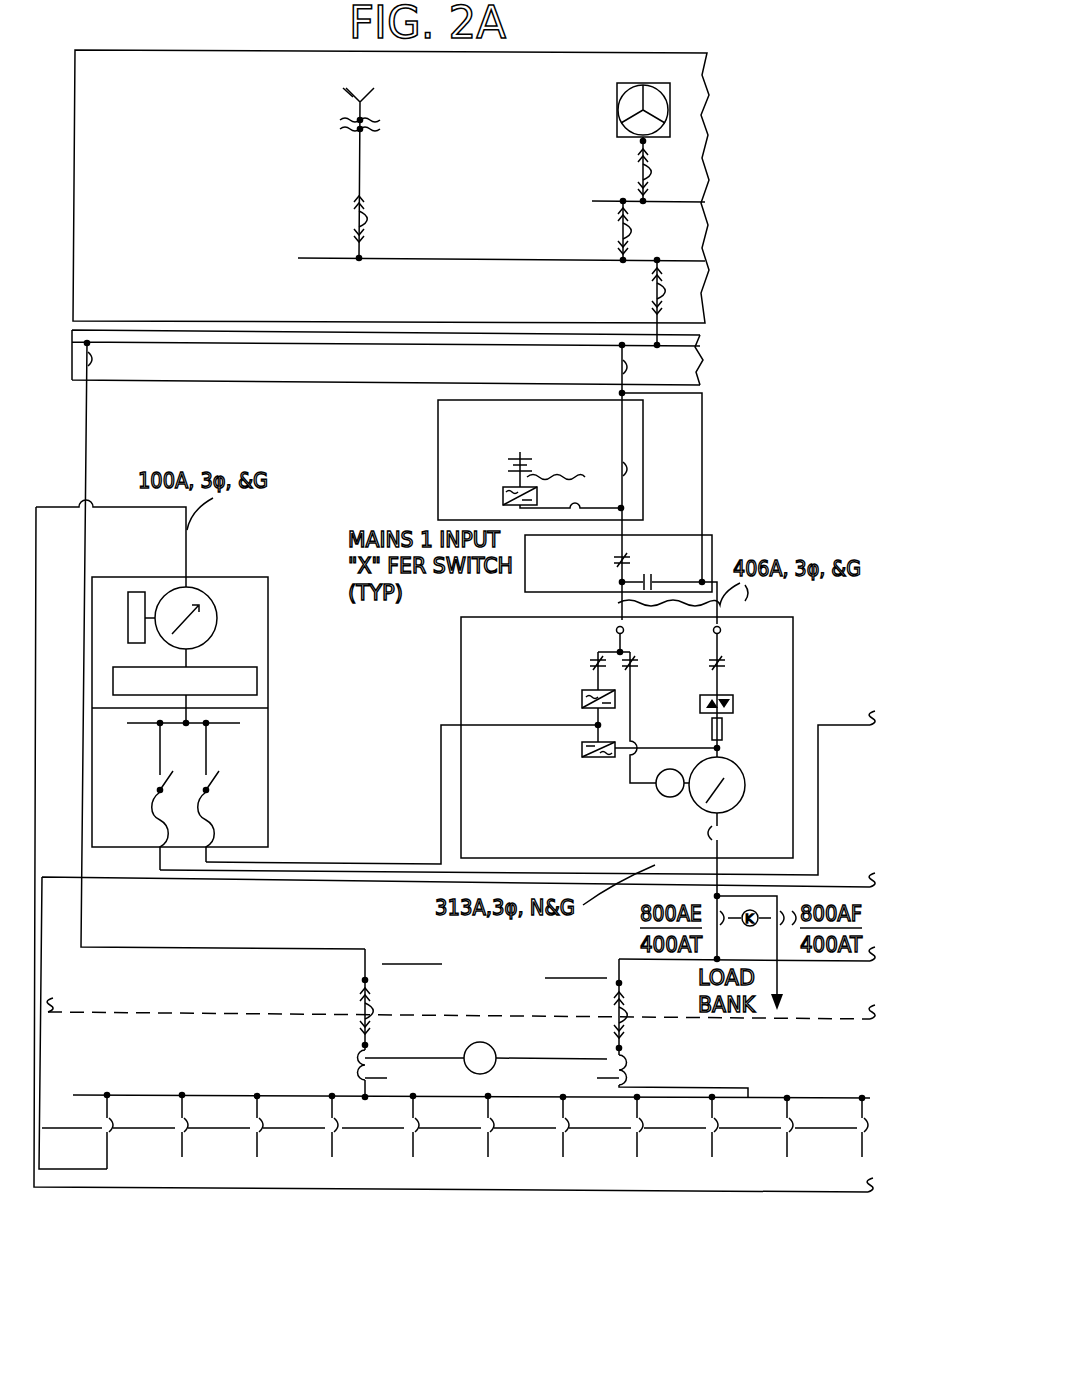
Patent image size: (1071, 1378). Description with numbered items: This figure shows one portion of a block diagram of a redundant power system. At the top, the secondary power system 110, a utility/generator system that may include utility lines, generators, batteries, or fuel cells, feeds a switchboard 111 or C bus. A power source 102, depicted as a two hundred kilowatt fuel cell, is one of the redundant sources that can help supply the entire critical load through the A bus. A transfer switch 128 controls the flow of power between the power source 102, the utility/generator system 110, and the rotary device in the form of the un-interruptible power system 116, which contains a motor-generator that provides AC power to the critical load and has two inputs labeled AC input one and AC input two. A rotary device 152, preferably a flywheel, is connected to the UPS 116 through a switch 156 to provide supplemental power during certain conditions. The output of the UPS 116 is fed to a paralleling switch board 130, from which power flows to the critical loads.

The secondary power system 110 is at (75, 72).
The switchboard 111 is at (70, 362).
The power source 102 is at (438, 463).
The transfer switch 128 is at (712, 545).
The un-interruptible power system 116 is at (483, 618).
The rotary device 152 is at (153, 577).
The switch 156 is at (113, 850).
The paralleling switch board 130 is at (183, 1189).